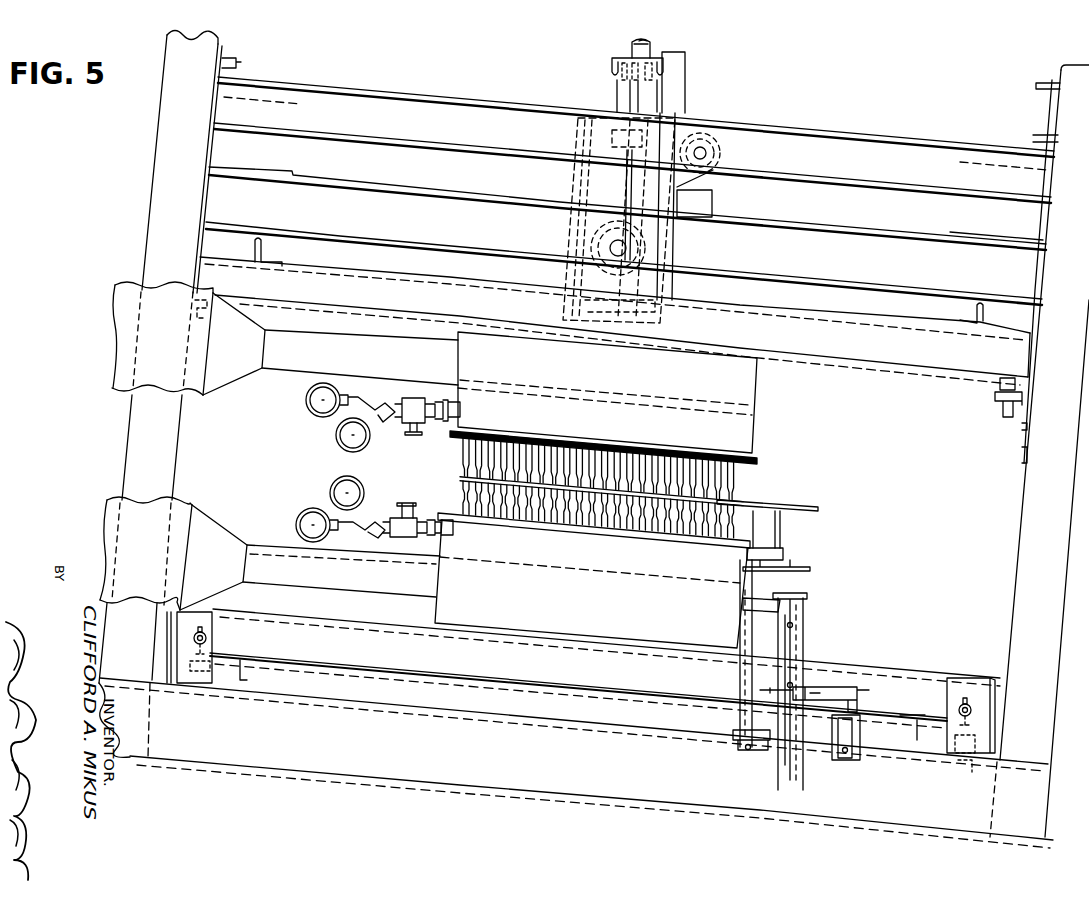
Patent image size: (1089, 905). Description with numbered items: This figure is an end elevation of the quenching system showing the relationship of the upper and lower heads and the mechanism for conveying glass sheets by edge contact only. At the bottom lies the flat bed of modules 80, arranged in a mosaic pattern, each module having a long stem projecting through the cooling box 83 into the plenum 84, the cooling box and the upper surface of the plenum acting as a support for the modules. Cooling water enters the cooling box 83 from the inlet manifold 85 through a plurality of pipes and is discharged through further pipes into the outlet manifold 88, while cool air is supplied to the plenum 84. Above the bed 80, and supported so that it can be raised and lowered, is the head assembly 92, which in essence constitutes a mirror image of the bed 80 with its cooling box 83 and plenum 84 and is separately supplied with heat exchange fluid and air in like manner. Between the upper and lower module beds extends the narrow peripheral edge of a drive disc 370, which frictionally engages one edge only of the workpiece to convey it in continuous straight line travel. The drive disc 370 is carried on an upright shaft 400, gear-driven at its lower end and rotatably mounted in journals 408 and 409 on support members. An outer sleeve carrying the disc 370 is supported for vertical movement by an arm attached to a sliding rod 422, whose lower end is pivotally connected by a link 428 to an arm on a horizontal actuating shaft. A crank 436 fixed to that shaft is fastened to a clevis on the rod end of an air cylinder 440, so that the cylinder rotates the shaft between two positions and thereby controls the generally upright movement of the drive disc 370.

The bed of modules 80 is at (451, 493).
The cooling box 83 is at (592, 580).
The plenum 84 is at (606, 644).
The inlet manifold 85 is at (339, 484).
The outlet manifold 88 is at (296, 523).
The head assembly 92 is at (766, 415).
The drive disc 370 is at (807, 503).
The upright shaft 400 is at (792, 596).
The journal 408 is at (743, 603).
The journal 409 is at (733, 742).
The sliding rod 422 is at (797, 563).
The link 428 is at (800, 639).
The crank 436 is at (838, 690).
The air cylinder 440 is at (840, 738).